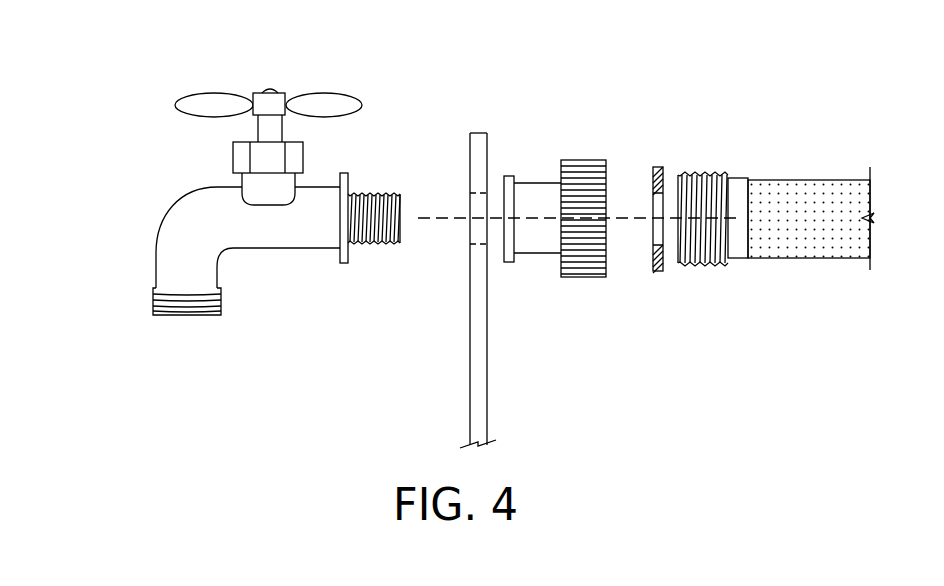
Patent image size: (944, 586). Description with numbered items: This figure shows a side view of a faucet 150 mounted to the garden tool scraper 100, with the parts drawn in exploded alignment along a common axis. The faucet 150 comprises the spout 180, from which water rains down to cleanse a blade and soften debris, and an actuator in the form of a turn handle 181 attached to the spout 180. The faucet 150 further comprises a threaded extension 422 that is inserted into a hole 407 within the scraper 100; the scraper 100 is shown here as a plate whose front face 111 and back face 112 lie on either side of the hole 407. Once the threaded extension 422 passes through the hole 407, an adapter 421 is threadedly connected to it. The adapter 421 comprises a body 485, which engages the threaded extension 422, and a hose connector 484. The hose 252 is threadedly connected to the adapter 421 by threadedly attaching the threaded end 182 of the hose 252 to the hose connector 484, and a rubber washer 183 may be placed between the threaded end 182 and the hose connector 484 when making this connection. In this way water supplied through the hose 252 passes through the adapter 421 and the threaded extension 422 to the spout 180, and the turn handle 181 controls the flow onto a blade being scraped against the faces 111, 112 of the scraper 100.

The garden tool scraper 100 is at (473, 133).
The front face 111 is at (468, 410).
The back face 112 is at (489, 410).
The faucet 150 is at (120, 243).
The spout 180 is at (188, 232).
The turn handle 181 is at (205, 100).
The threaded end 182 is at (708, 175).
The rubber washer 183 is at (654, 167).
The hose 252 is at (803, 190).
The hole 407 is at (470, 233).
The adapter 421 is at (540, 178).
The threaded extension 422 is at (380, 195).
The hose connector 484 is at (595, 267).
The body 485 is at (533, 240).